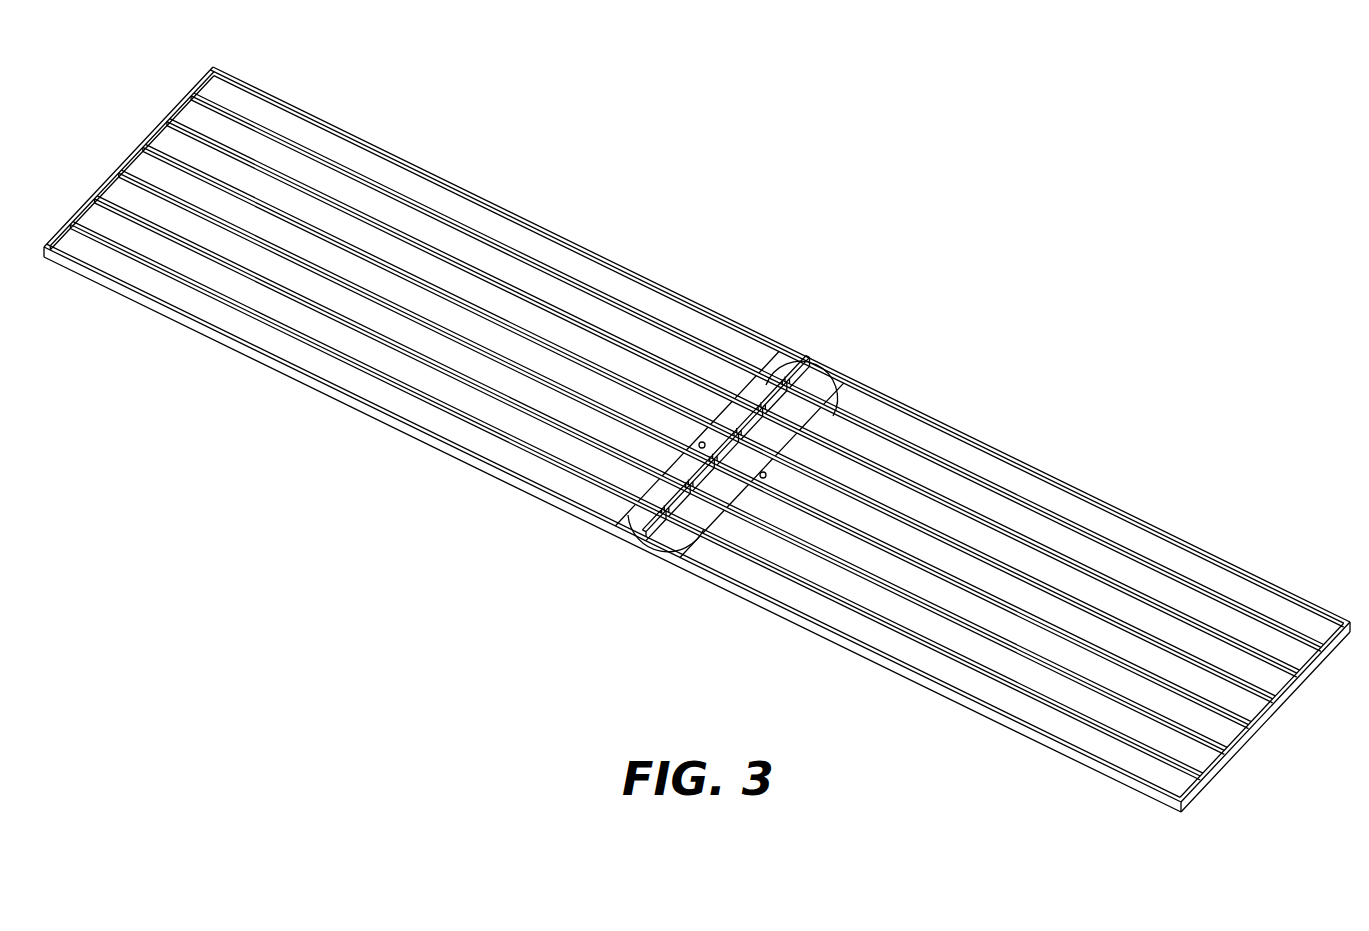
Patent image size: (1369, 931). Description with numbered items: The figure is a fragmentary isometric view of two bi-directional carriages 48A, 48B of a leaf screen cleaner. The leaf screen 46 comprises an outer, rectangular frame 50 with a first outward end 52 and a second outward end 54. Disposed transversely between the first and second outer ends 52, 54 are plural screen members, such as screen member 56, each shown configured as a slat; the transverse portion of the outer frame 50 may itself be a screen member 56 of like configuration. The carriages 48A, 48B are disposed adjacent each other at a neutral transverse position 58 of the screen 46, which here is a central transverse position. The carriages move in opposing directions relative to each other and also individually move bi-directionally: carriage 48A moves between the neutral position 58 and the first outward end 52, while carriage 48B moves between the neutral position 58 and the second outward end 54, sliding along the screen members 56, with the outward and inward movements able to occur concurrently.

The leaf screen 46 is at (676, 232).
The carriage 48A is at (821, 392).
The carriage 48B is at (778, 372).
The outer frame 50 is at (987, 437).
The first outward end 52 is at (1253, 722).
The second outward end 54 is at (142, 149).
The screen member 56 is at (1020, 578).
The neutral transverse position 58 is at (630, 572).